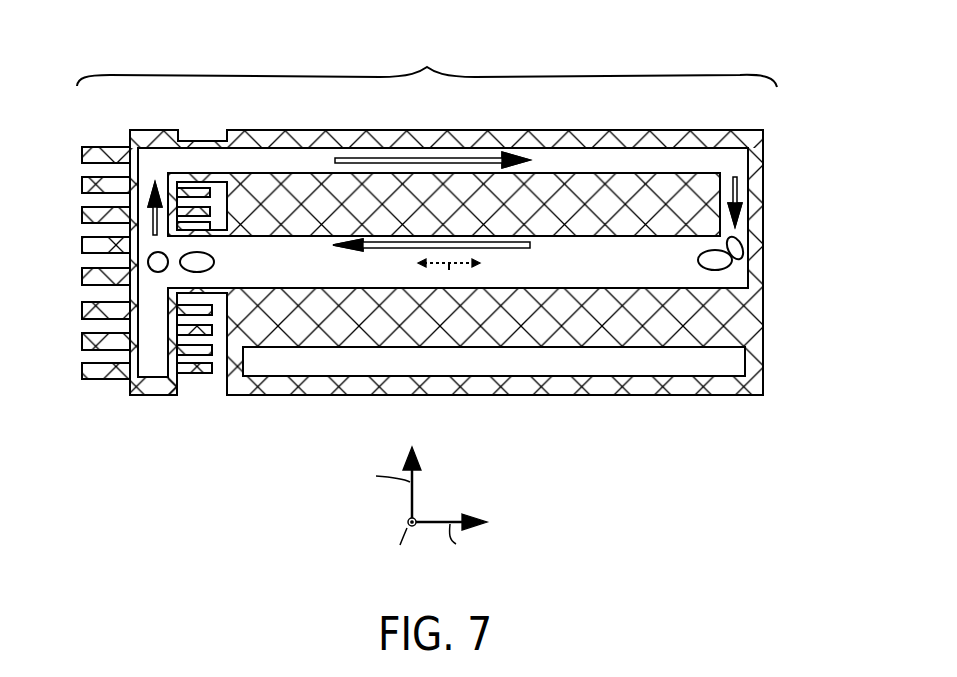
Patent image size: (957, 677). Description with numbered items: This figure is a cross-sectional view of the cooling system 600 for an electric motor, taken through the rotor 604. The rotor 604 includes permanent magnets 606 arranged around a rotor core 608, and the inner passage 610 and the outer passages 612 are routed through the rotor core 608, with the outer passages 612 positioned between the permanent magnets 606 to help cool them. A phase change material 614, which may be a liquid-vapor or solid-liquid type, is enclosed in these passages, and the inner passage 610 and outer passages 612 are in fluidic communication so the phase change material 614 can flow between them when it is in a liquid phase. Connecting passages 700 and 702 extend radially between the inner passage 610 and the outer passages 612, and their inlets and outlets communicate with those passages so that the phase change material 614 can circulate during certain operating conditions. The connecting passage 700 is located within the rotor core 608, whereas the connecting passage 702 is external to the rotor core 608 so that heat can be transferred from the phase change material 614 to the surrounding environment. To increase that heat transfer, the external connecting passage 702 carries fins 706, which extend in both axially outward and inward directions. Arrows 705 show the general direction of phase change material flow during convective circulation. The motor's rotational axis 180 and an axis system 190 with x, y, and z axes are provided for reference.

The cooling system 600 is at (806, 127).
The rotor 604 is at (427, 62).
The permanent magnets 606 is at (405, 366).
The rotor core 608 is at (540, 327).
The inner passage 610 is at (596, 285).
The outer passages 612 is at (556, 150).
The phase change material 614 is at (307, 160).
The connecting passage 700 is at (749, 230).
The connecting passage 702 is at (138, 203).
The arrows 705 is at (463, 160).
The fins 706 is at (91, 277).
The rotational axis 180 is at (449, 280).
The axis system 190 is at (450, 482).